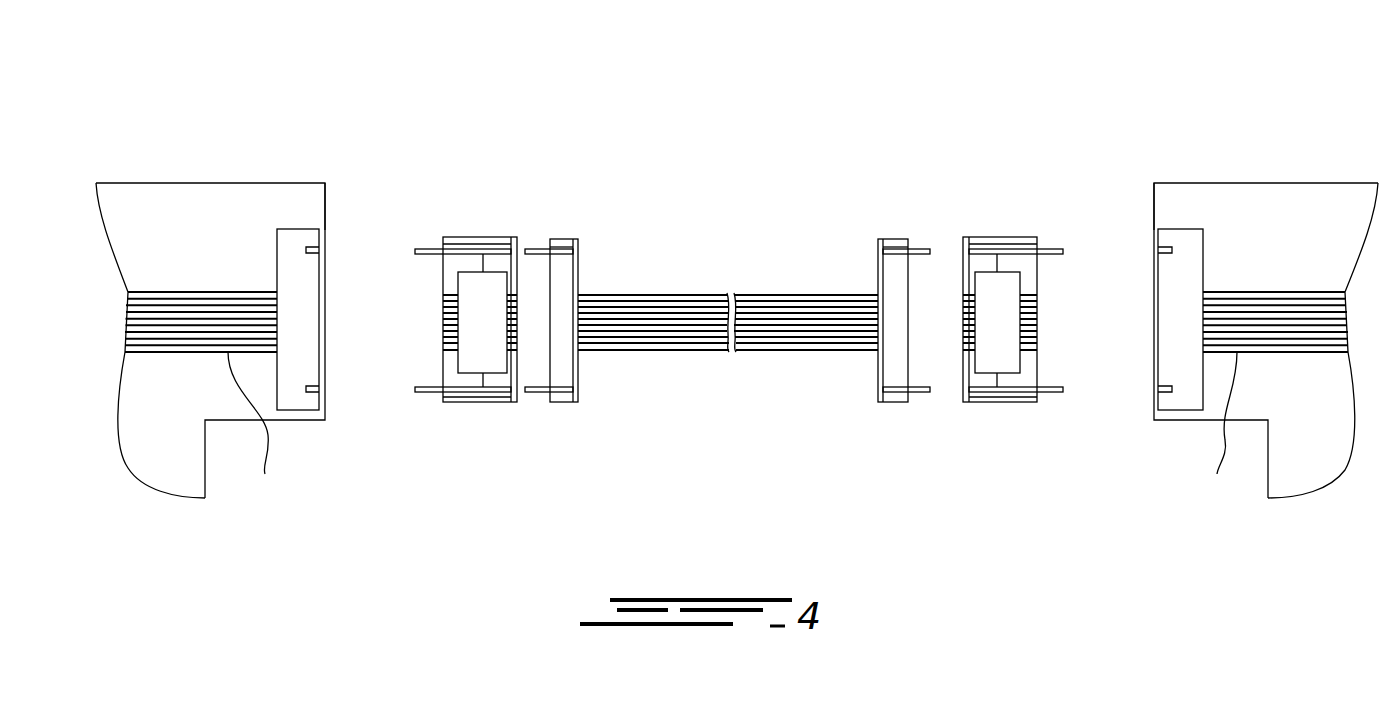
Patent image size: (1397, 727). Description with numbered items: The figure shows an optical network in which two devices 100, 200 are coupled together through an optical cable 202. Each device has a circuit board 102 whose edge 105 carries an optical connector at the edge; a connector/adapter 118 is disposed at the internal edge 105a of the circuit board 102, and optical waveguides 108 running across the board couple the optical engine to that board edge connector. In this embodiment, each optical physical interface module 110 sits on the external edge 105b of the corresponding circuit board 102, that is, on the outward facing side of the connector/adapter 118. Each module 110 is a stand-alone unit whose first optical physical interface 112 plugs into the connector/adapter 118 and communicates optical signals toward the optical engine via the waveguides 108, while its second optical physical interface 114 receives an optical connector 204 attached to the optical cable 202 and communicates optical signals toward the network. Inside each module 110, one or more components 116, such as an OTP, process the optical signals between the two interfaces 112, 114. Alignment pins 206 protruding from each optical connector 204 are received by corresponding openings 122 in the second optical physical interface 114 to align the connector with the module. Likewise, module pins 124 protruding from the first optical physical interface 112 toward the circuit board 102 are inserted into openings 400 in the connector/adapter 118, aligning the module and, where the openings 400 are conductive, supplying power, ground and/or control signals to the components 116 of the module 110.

The device 100 is at (133, 148).
The device 200 is at (1333, 146).
The circuit board 102 is at (182, 445).
The edge 105 is at (300, 150).
The internal edge 105a is at (314, 196).
The external edge 105b is at (325, 193).
The optical waveguides 108 is at (262, 292).
The optical physical interface module 110 is at (455, 237).
The first optical physical interface 112 is at (430, 337).
The second optical physical interface 114 is at (529, 281).
The components 116 is at (502, 365).
The connector/adapter 118 is at (305, 229).
The openings 122 is at (505, 249).
The pins 124 is at (418, 405).
The optical cable 202 is at (680, 295).
The optical connector 204 is at (560, 240).
The pins 206 is at (537, 408).
The openings 400 is at (318, 393).